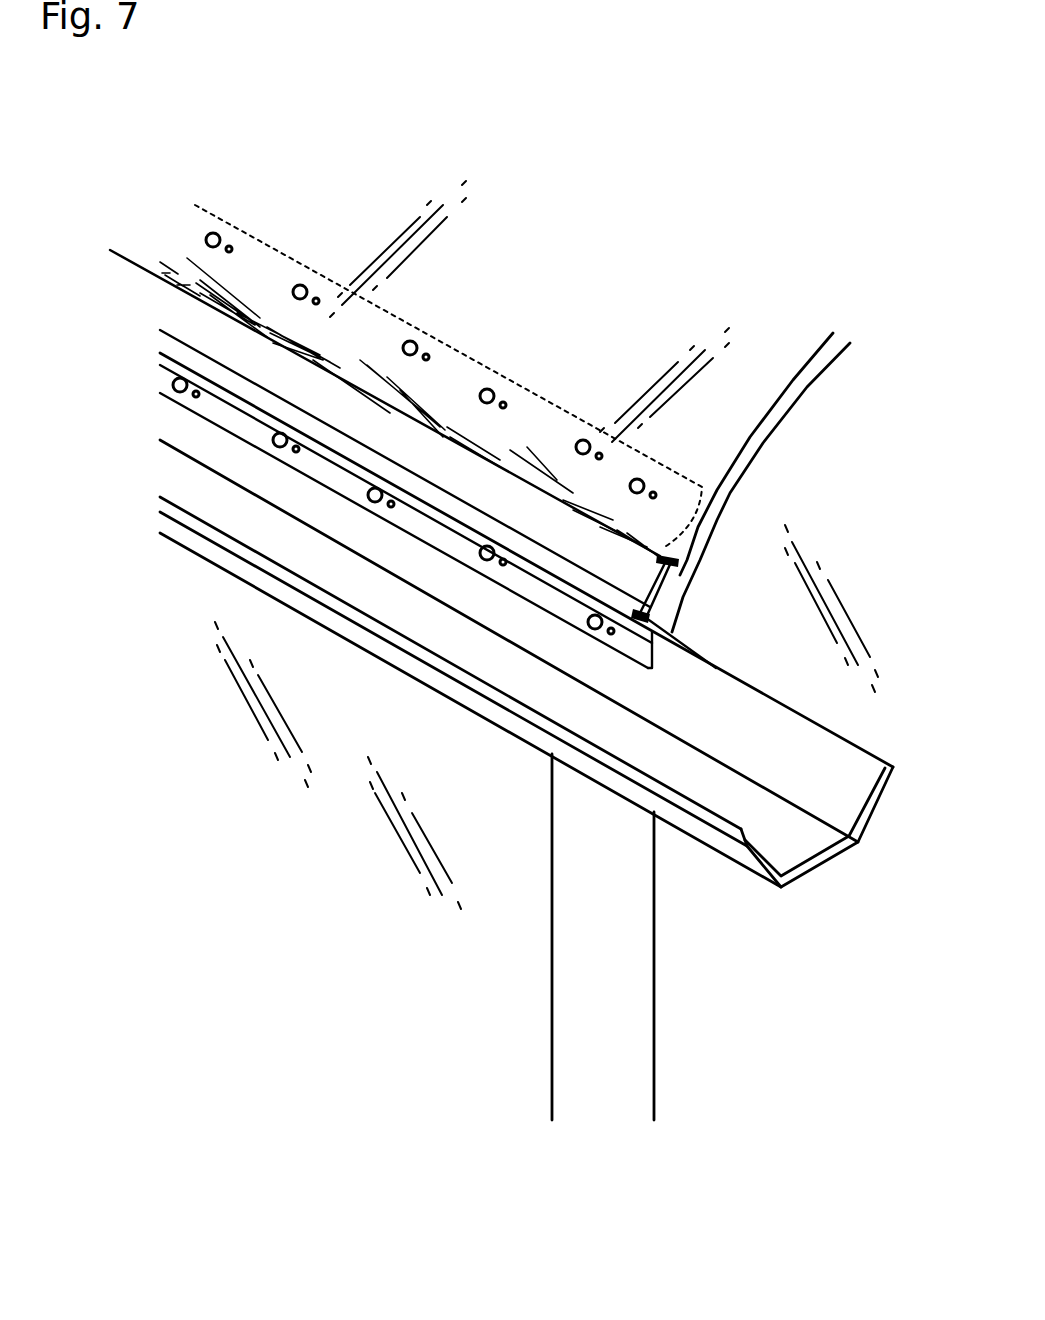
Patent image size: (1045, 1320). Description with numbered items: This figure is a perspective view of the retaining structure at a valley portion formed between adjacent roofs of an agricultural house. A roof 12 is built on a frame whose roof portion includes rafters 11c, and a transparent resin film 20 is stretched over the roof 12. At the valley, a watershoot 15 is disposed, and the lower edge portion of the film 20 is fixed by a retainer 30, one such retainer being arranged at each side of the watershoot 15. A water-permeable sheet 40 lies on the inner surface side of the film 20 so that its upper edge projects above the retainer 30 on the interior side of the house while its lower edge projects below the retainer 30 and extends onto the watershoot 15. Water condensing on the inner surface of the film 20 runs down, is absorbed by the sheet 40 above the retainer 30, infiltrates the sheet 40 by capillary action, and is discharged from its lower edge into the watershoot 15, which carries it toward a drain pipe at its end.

The roof 12 is at (371, 191).
The transparent resin film 20 is at (631, 249).
The water-permeable sheet 40 is at (447, 345).
The rafter 11c is at (797, 387).
The retainer 30 is at (628, 576).
The watershoot 15 is at (788, 812).